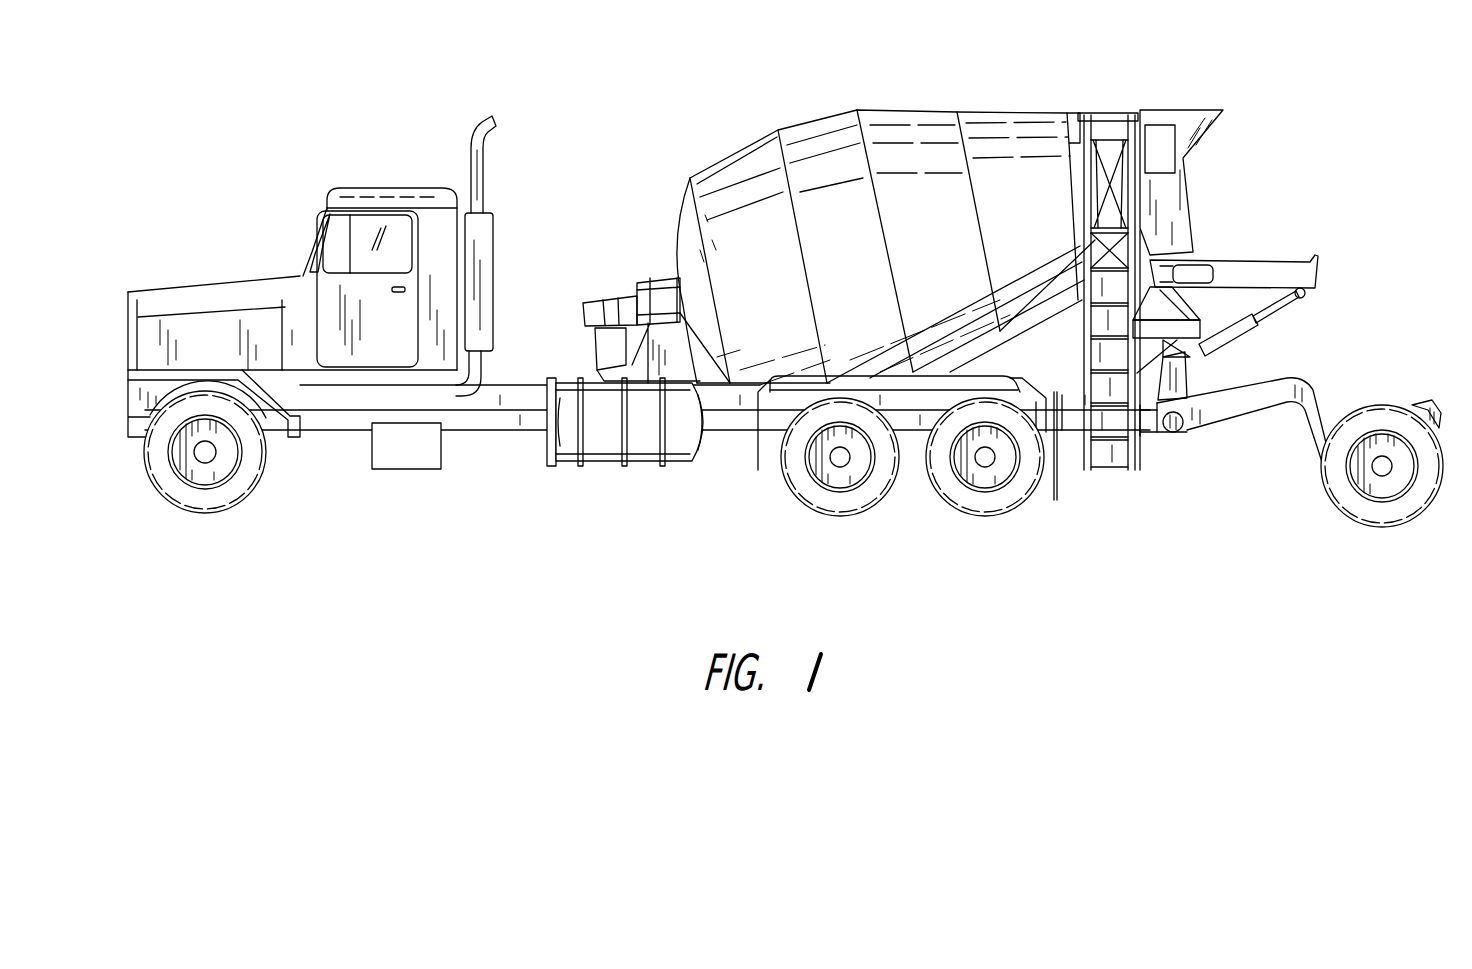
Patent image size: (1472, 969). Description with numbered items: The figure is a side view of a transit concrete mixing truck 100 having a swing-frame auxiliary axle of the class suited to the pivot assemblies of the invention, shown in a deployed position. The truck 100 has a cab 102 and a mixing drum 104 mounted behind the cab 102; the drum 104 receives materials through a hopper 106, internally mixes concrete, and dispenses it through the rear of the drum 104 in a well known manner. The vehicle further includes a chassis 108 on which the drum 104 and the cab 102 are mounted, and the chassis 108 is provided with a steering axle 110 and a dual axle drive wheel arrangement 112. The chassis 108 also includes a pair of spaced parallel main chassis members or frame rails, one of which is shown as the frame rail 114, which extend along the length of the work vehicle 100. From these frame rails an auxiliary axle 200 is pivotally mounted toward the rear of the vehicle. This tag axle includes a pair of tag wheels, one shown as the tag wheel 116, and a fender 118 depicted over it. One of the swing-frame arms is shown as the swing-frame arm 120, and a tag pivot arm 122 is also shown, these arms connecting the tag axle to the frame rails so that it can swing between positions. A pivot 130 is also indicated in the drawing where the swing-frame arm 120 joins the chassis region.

The transit concrete mixing truck 100 is at (766, 26).
The cab 102 is at (368, 172).
The mixing drum 104 is at (881, 55).
The hopper 106 is at (1195, 104).
The chassis 108 is at (499, 455).
The steering axle 110 is at (210, 455).
The dual axle drive wheel arrangement 112 is at (924, 510).
The main chassis member 114 is at (730, 412).
The tag wheel 116 is at (1398, 526).
The fender 118 is at (1428, 407).
The swing-frame arm 120 is at (1240, 406).
The tag pivot arm 122 is at (1184, 378).
The pivot 130 is at (1180, 431).
The auxiliary axle 200 is at (1340, 361).